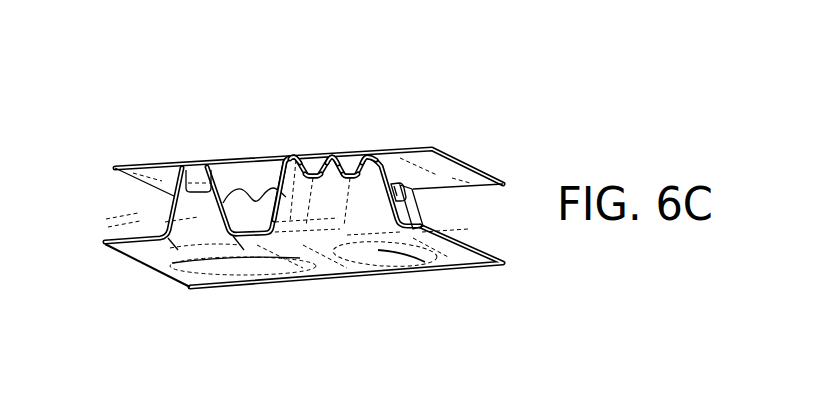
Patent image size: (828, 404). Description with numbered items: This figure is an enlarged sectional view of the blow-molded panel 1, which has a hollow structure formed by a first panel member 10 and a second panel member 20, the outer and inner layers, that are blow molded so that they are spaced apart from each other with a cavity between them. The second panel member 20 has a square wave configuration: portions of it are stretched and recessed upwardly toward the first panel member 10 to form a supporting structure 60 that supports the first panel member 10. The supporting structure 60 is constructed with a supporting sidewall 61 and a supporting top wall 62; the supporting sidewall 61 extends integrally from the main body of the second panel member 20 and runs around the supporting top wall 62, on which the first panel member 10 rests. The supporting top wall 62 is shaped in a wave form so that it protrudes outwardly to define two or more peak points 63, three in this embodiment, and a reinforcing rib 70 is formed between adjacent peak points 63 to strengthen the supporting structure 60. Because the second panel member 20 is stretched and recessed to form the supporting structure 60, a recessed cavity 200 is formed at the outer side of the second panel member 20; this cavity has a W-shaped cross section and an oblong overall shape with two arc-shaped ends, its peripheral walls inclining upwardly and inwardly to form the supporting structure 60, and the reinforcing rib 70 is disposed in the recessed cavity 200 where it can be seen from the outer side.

The blow-molded panel 1 is at (169, 289).
The first panel member 10 is at (153, 166).
The second panel member 20 is at (494, 269).
The supporting structure 60 is at (331, 97).
The supporting sidewall 61 is at (402, 185).
The supporting top wall 62 is at (283, 158).
The peak point 63 is at (293, 157).
The reinforcing rib 70 is at (315, 172).
The recessed cavity 200 is at (367, 224).